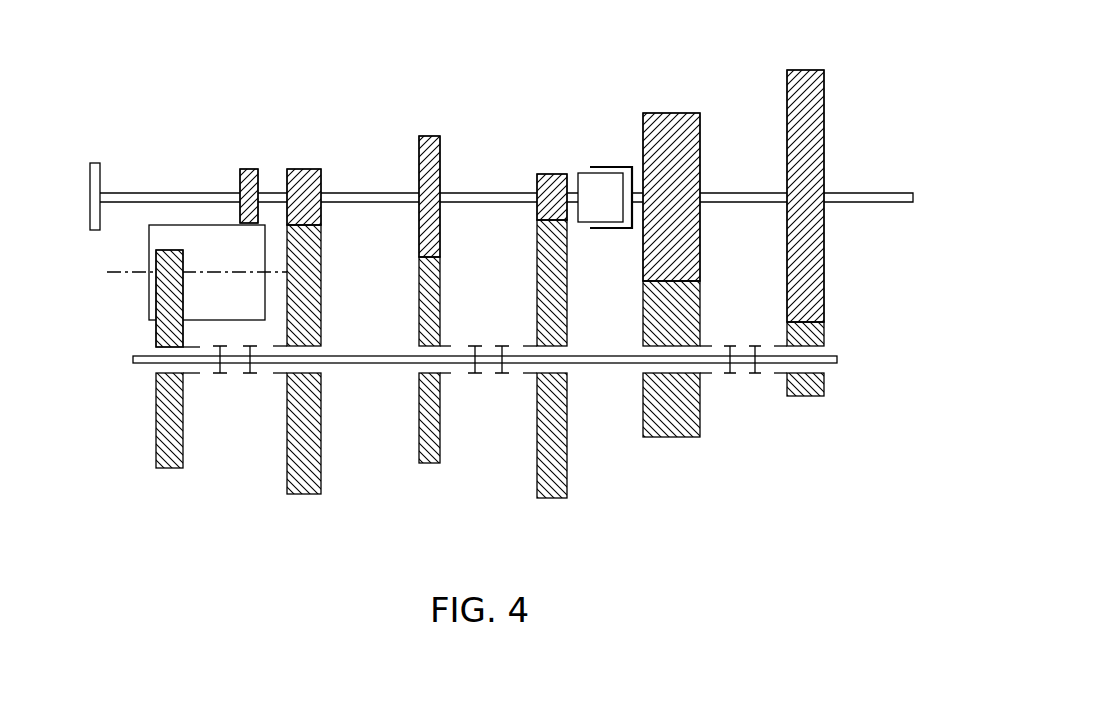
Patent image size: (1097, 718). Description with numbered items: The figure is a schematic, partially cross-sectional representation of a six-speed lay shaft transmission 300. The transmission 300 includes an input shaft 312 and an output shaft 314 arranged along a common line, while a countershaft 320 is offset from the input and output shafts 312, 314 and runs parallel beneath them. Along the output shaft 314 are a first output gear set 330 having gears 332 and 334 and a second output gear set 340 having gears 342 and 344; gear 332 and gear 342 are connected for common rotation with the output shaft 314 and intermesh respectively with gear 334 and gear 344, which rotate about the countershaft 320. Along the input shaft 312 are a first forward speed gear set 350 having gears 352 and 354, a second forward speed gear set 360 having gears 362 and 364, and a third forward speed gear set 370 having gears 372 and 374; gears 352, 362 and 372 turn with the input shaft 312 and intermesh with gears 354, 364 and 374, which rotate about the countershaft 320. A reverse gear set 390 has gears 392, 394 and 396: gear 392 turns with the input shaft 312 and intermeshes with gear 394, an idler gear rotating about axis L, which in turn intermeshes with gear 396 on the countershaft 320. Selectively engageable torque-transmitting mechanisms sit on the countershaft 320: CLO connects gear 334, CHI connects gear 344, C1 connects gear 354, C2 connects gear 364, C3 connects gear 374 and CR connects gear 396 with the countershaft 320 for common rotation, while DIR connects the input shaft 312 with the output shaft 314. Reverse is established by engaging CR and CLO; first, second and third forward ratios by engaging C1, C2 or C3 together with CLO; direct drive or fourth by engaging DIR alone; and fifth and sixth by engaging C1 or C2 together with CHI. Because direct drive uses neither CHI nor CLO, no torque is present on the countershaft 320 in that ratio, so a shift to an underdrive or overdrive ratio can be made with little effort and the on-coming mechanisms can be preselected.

The transmission 300 is at (149, 95).
The input shaft 312 is at (165, 192).
The output shaft 314 is at (880, 204).
The countershaft 320 is at (362, 364).
The first output gear set 330 is at (832, 78).
The gear 332 is at (824, 116).
The gear 334 is at (824, 382).
The second output gear set 340 is at (707, 118).
The gear 342 is at (700, 161).
The gear 344 is at (644, 392).
The first forward speed gear set 350 is at (577, 488).
The gear 352 is at (537, 181).
The gear 354 is at (568, 438).
The second forward speed gear set 360 is at (333, 480).
The gear 362 is at (321, 175).
The gear 364 is at (321, 296).
The third forward speed gear set 370 is at (450, 456).
The gear 372 is at (440, 146).
The gear 374 is at (440, 300).
The reverse gear set 390 is at (196, 460).
The gear 392 is at (240, 178).
The idler gear 394 is at (236, 262).
The gear 396 is at (156, 333).
The torque-transmitting mechanism CR is at (215, 380).
The torque-transmitting mechanism C1 is at (505, 380).
The torque-transmitting mechanism C2 is at (257, 380).
The torque-transmitting mechanism C3 is at (463, 380).
The second output torque-transmitting mechanism CHI is at (722, 342).
The first output torque-transmitting mechanism CLO is at (765, 342).
The torque-transmitting mechanism DIR is at (583, 166).
The axis L is at (130, 275).